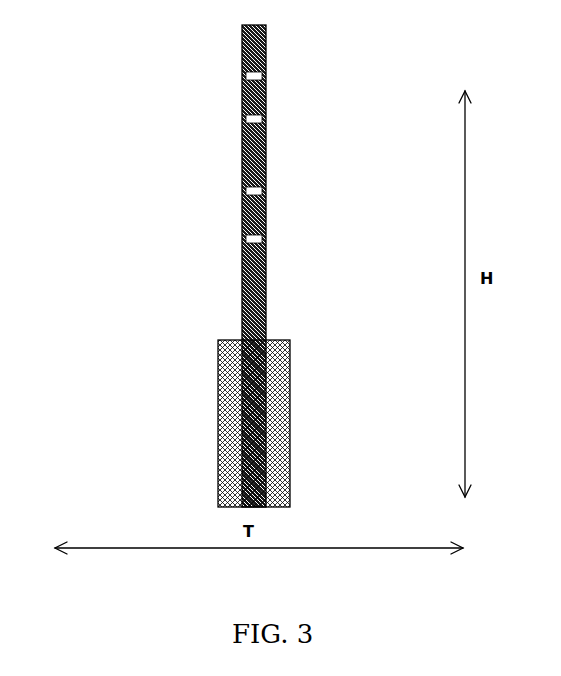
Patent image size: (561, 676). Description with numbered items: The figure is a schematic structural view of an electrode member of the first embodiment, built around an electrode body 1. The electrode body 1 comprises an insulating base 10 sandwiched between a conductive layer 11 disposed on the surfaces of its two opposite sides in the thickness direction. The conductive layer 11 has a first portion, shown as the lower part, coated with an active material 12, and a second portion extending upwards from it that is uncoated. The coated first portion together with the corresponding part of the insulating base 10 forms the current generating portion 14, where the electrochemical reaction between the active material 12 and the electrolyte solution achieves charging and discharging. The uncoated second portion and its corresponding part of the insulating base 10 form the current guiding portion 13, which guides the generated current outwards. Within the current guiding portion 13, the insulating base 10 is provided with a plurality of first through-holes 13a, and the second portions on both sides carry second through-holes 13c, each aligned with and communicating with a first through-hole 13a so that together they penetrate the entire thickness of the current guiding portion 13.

The electrode body 1 is at (210, 107).
The insulating base 10 is at (266, 163).
The conductive layer 11 is at (241, 241).
The active material 12 is at (281, 340).
The current guiding portion 13 is at (242, 168).
The first through-hole 13a is at (266, 119).
The second through-hole 13c is at (266, 76).
The current generating portion 14 is at (218, 376).